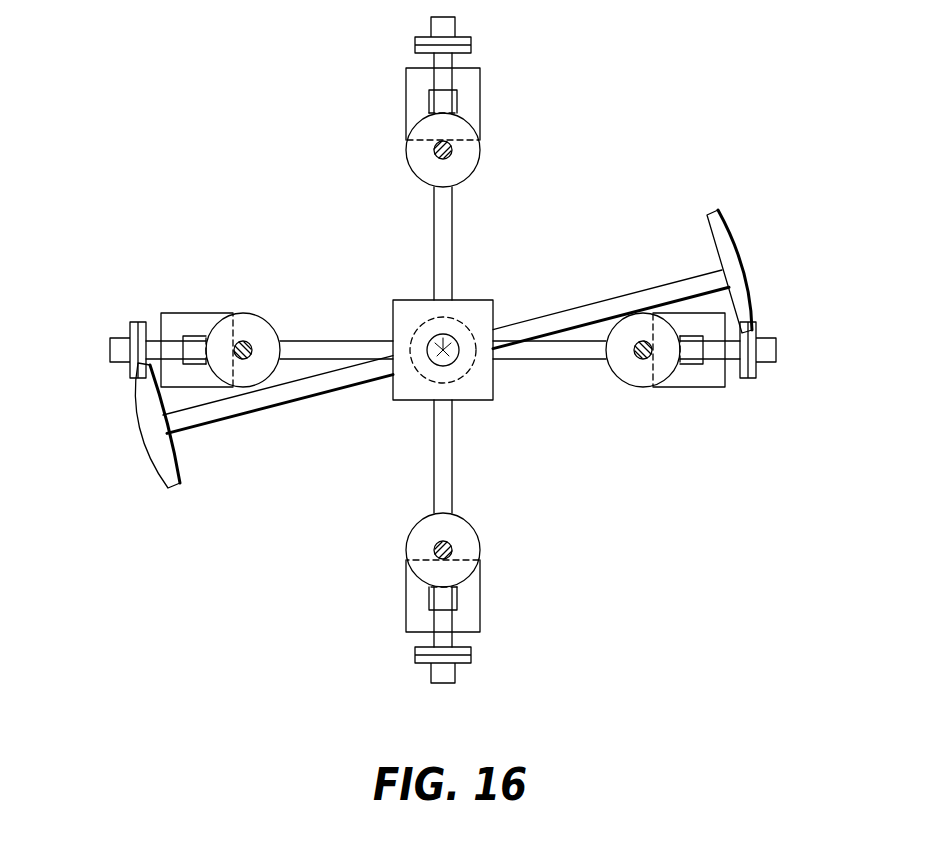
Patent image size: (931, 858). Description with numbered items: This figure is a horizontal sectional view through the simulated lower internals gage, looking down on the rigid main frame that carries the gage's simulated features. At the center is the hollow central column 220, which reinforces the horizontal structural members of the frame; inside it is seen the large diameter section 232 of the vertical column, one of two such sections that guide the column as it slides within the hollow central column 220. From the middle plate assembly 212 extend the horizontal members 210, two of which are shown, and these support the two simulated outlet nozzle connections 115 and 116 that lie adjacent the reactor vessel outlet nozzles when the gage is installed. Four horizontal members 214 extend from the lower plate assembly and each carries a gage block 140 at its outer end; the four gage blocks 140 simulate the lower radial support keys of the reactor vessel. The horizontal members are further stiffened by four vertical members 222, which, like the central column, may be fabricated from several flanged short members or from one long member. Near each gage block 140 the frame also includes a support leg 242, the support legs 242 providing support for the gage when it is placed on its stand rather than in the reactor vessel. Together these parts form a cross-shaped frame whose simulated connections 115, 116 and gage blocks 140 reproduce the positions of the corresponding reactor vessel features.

The simulated outlet nozzle connection 115 is at (140, 430).
The simulated outlet nozzle connection 116 is at (745, 268).
The gage block 140 is at (455, 28).
The horizontal member 210 is at (219, 421).
The middle plate assembly 212 is at (465, 300).
The horizontal member 214 is at (313, 342).
The hollow central column 220 is at (480, 312).
The vertical member 222 is at (436, 150).
The large diameter section 232 is at (445, 350).
The support leg 242 is at (480, 107).